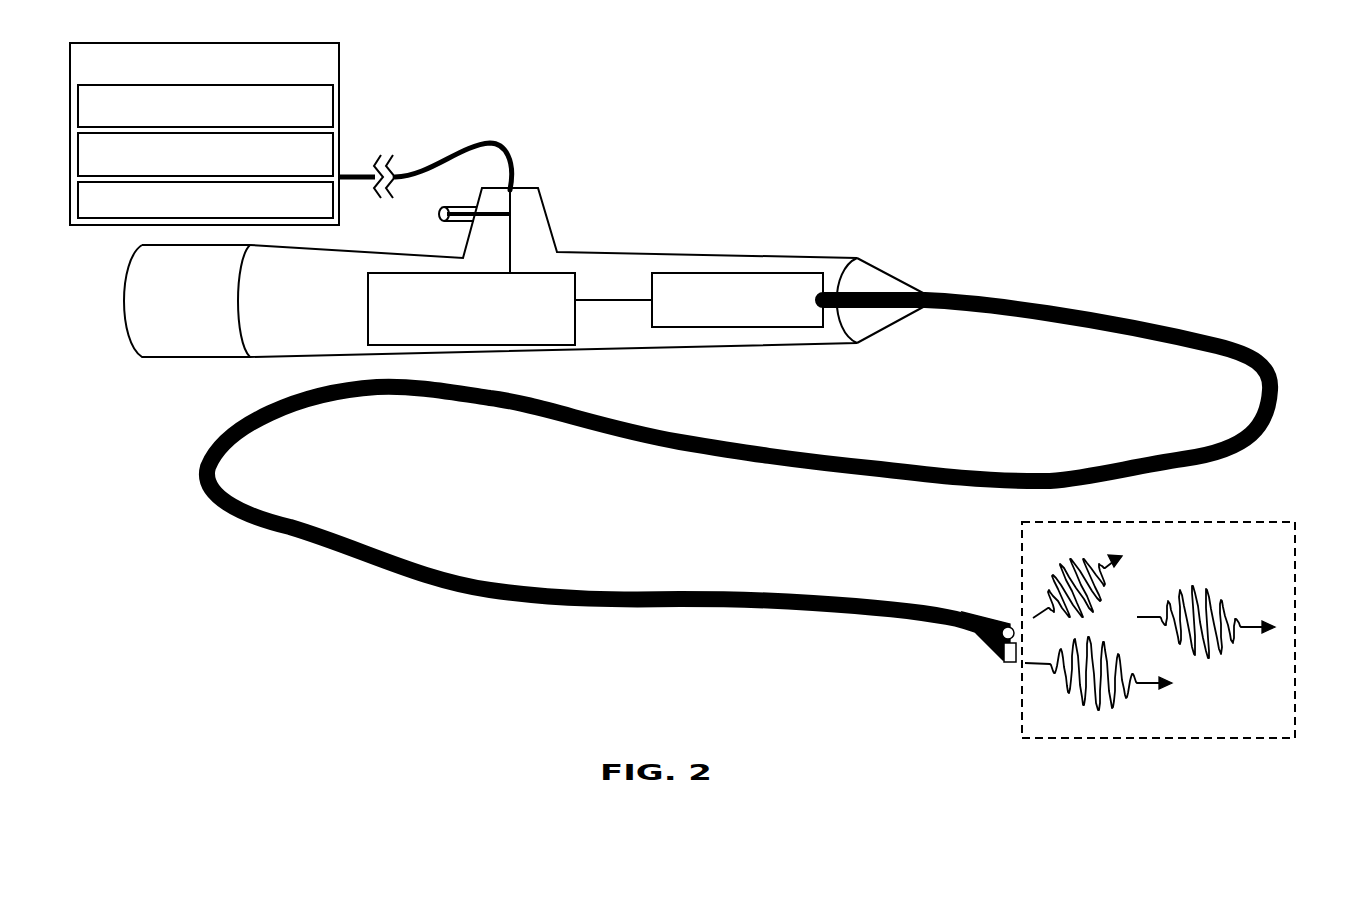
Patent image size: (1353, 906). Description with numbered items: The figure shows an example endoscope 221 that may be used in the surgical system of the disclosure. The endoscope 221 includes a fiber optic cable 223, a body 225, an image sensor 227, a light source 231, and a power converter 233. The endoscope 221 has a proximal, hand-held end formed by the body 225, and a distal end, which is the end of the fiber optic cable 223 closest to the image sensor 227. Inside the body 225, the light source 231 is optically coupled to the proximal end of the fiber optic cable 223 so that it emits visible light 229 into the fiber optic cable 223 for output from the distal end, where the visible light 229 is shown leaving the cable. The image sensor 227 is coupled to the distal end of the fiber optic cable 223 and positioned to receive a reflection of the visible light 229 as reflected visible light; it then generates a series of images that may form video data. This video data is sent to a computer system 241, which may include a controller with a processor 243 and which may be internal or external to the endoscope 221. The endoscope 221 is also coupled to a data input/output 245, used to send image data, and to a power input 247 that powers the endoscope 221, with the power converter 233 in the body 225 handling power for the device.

The endoscope 221 is at (1098, 84).
The fiber optic cable 223 is at (1248, 297).
The body 225 is at (775, 236).
The image sensor 227 is at (1010, 662).
The visible light 229 is at (1250, 561).
The light source 231 is at (752, 324).
The power converter 233 is at (487, 333).
The computer system 241 is at (318, 78).
The processor 243 is at (283, 118).
The data input/output 245 is at (320, 164).
The power input 247 is at (290, 213).